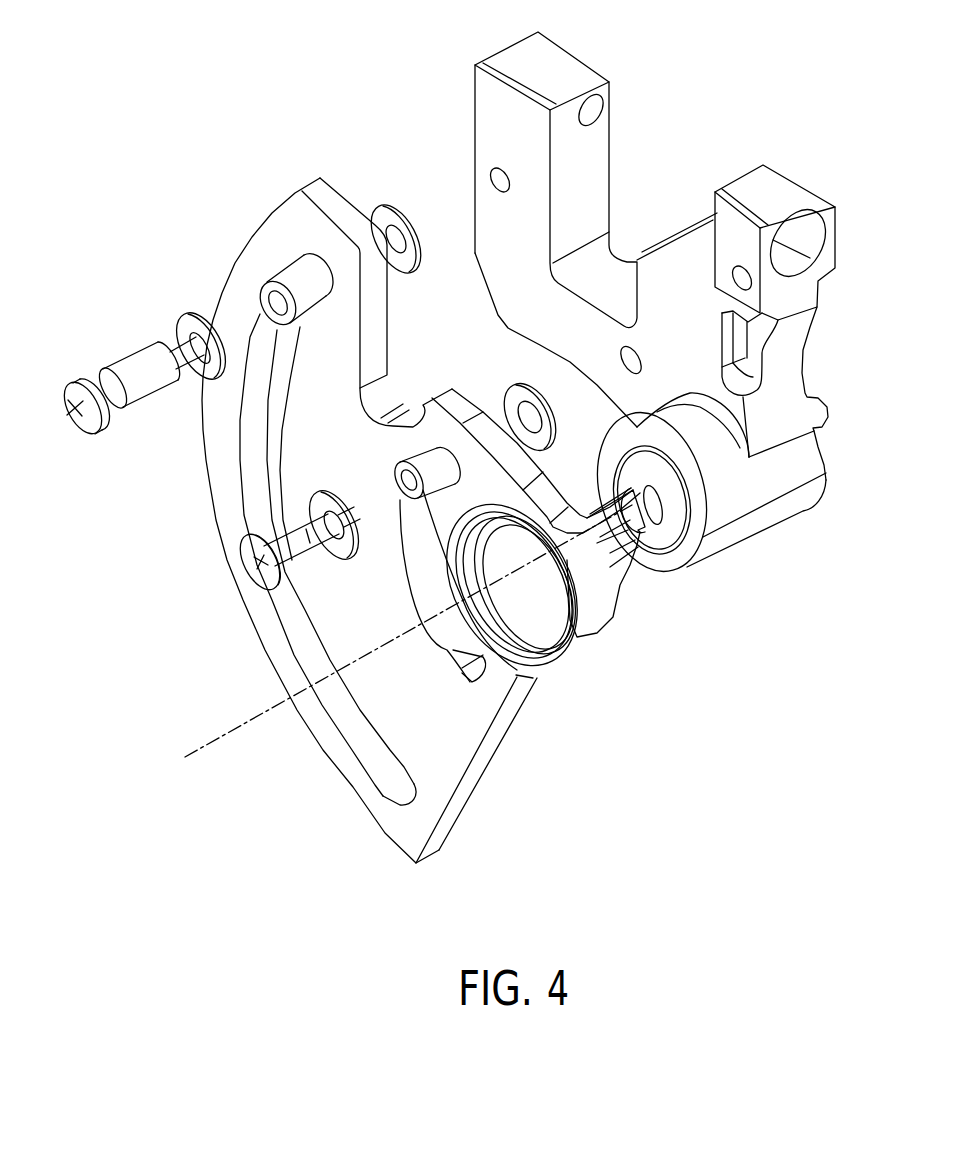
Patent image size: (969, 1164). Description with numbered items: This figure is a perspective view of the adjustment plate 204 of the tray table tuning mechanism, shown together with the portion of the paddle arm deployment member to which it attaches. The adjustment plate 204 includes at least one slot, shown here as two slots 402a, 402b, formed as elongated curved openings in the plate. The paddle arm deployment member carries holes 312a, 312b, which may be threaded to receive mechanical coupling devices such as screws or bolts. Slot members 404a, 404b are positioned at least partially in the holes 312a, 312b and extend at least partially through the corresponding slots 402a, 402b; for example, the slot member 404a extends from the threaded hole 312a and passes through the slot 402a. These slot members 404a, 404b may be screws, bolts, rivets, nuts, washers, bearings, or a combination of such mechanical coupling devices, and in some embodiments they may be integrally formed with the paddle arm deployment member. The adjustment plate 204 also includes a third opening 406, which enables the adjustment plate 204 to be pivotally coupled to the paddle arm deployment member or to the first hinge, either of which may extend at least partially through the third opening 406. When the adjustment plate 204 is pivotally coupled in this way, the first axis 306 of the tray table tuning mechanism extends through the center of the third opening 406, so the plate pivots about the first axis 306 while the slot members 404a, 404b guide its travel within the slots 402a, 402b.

The adjustment plate 204 is at (168, 98).
The hole 312a is at (500, 156).
The hole 312b is at (643, 334).
The slot 402a is at (385, 777).
The slot 402b is at (520, 667).
The slot member 404a is at (115, 372).
The slot member 404b is at (258, 547).
The third opening 406 is at (578, 608).
The first axis 306 is at (242, 727).